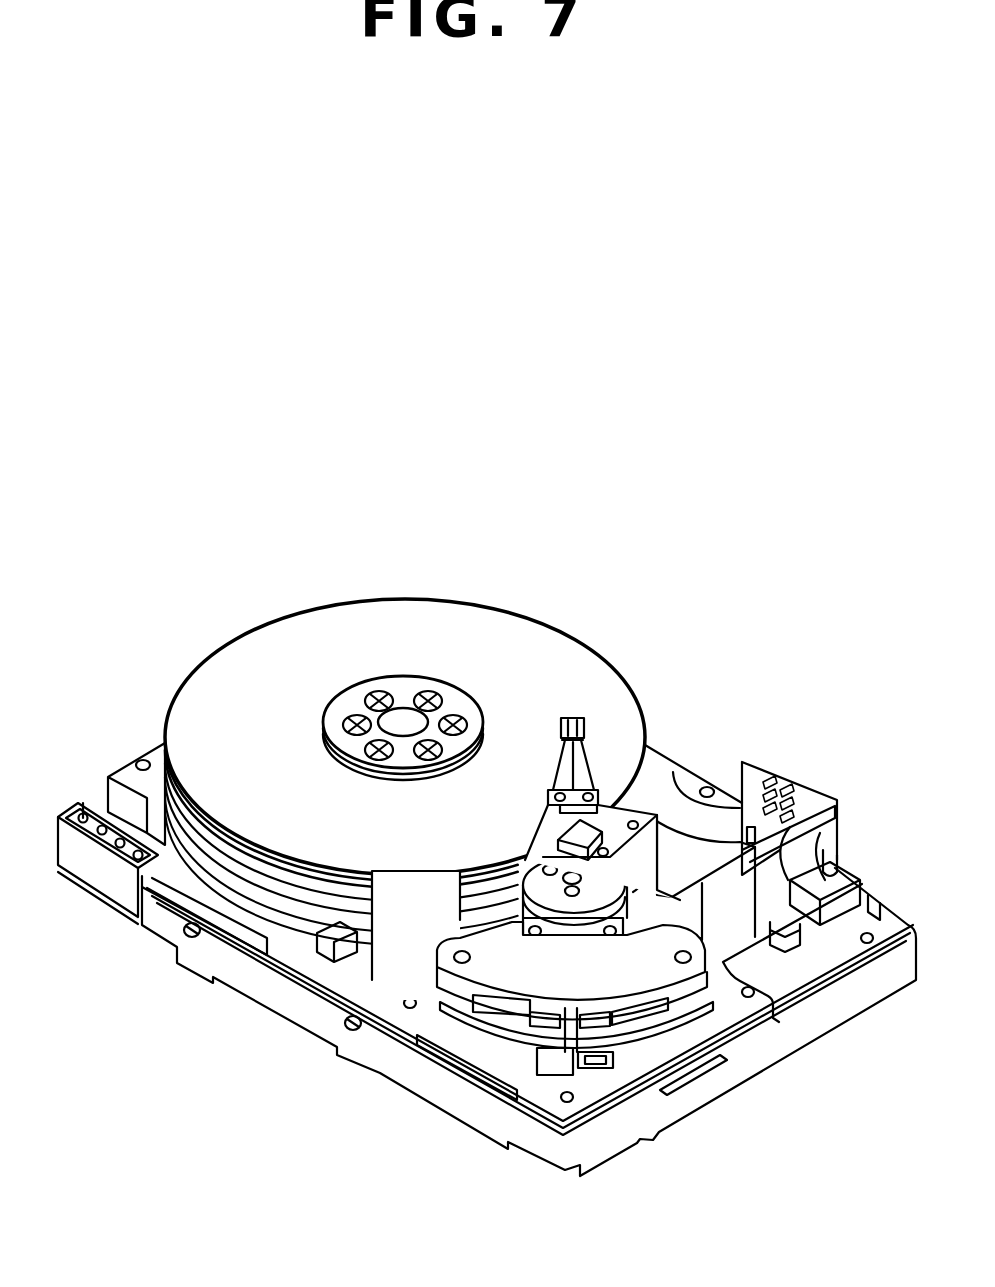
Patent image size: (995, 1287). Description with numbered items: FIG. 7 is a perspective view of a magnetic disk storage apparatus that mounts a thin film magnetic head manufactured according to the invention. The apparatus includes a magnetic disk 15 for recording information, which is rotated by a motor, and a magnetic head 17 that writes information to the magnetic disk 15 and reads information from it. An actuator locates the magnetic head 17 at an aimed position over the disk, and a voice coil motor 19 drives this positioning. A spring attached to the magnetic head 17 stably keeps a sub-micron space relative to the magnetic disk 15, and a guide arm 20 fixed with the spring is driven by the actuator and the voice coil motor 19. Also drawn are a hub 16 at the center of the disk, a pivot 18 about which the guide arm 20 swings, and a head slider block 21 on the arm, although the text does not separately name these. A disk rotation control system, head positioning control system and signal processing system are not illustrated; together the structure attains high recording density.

The magnetic disk 15 is at (248, 660).
The spindle hub 16 is at (367, 686).
The magnetic head 17 is at (574, 717).
The actuator pivot 18 is at (580, 874).
The voice coil motor 19 is at (643, 1018).
The guide arm 20 is at (585, 765).
The head slider 21 is at (612, 812).